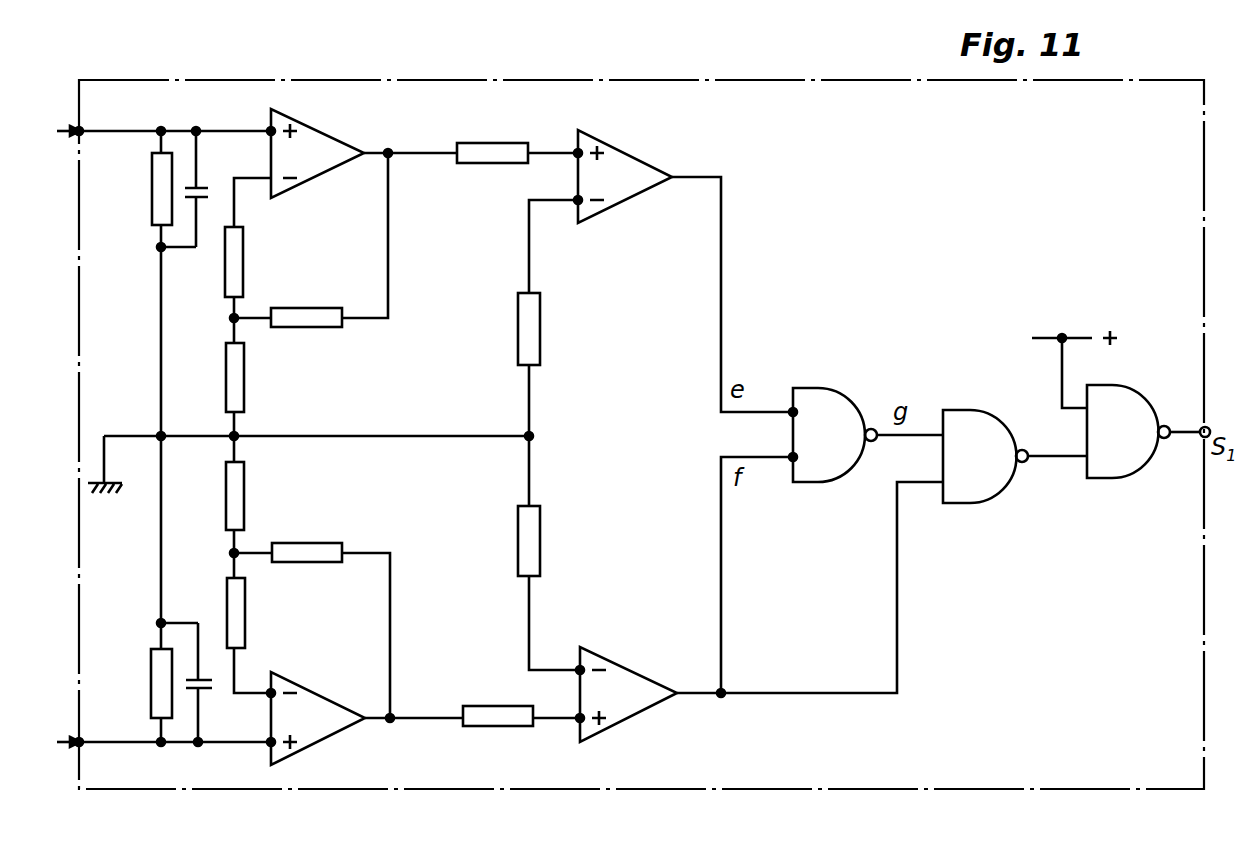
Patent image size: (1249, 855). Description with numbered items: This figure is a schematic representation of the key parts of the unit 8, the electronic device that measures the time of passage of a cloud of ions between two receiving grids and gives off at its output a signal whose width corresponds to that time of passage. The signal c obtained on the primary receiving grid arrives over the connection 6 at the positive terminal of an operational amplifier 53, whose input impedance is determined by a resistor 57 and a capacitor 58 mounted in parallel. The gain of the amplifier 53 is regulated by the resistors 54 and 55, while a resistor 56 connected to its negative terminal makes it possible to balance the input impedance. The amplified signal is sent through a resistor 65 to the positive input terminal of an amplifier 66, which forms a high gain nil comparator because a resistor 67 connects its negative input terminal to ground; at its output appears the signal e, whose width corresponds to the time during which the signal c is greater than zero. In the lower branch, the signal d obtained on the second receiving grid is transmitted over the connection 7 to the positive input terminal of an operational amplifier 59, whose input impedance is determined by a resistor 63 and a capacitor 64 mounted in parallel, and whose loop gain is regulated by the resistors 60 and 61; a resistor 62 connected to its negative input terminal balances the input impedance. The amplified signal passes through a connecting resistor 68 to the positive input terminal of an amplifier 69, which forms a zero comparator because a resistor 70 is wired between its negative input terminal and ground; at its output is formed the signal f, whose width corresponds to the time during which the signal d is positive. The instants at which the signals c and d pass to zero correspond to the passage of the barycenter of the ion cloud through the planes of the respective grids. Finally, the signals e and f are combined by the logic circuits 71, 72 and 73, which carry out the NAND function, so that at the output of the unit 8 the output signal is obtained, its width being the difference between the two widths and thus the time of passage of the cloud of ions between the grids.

The connection 6 is at (76, 137).
The connection 7 is at (76, 749).
The unit 8 is at (390, 790).
The operational amplifier 53 is at (334, 149).
The resistor 54 is at (313, 309).
The resistor 55 is at (245, 399).
The resistor 56 is at (243, 272).
The resistor 57 is at (152, 195).
The capacitor 58 is at (201, 190).
The operational amplifier 59 is at (320, 699).
The resistor 60 is at (311, 544).
The resistor 61 is at (246, 507).
The resistor 62 is at (245, 630).
The resistor 63 is at (151, 672).
The capacitor 64 is at (207, 691).
The resistor 65 is at (488, 143).
The amplifier 66 is at (635, 162).
The resistor 67 is at (540, 333).
The connecting resistor 68 is at (495, 728).
The amplifier 69 is at (630, 670).
The resistor 70 is at (540, 547).
The logic circuit 71 is at (840, 400).
The logic circuit 72 is at (978, 424).
The logic circuit 73 is at (1133, 403).